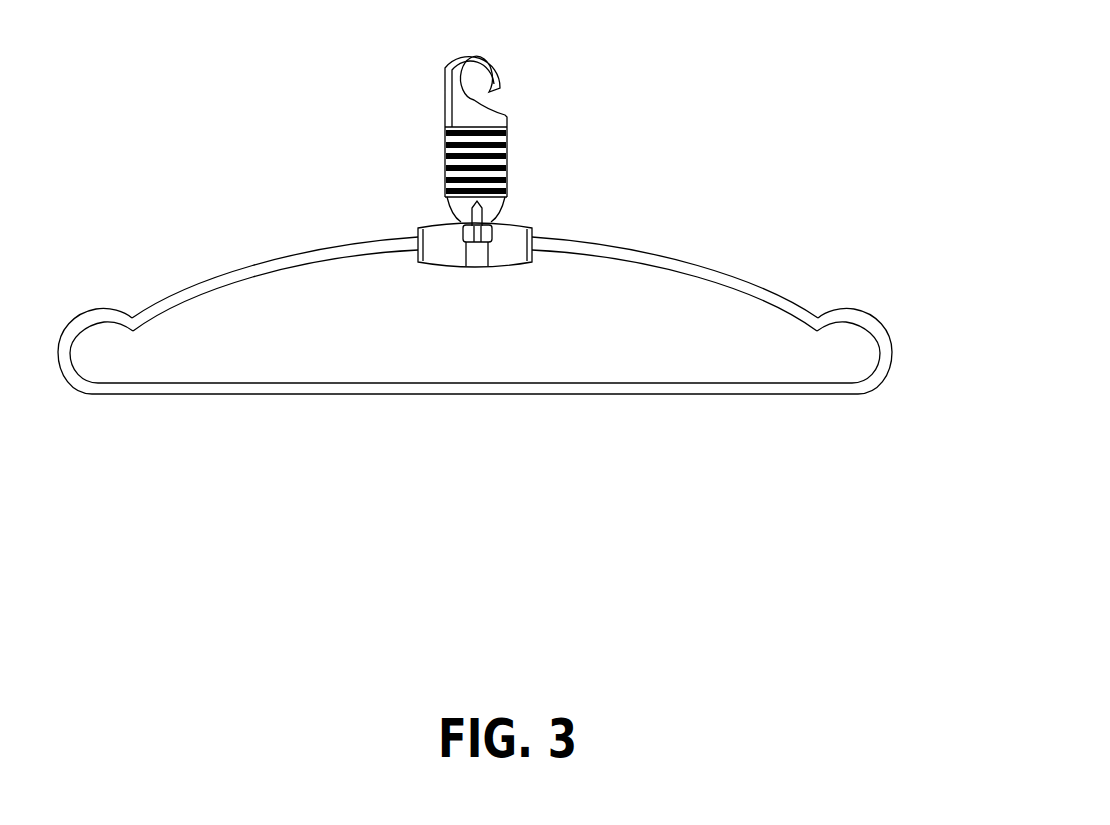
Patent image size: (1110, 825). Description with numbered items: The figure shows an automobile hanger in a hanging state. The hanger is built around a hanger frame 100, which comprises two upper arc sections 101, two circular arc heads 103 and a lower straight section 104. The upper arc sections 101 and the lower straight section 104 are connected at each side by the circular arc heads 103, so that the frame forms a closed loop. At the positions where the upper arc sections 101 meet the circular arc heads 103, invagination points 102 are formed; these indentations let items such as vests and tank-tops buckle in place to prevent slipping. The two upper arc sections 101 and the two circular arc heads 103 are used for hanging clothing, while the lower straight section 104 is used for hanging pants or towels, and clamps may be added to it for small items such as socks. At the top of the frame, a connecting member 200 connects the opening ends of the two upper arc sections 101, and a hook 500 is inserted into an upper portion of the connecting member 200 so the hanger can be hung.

The hanger frame 100 is at (308, 238).
The upper arc sections 101 is at (717, 268).
The invagination points 102 is at (823, 317).
The circular arc heads 103 is at (872, 317).
The lower straight section 104 is at (618, 387).
The connecting member 200 is at (436, 230).
The hook 500 is at (503, 118).